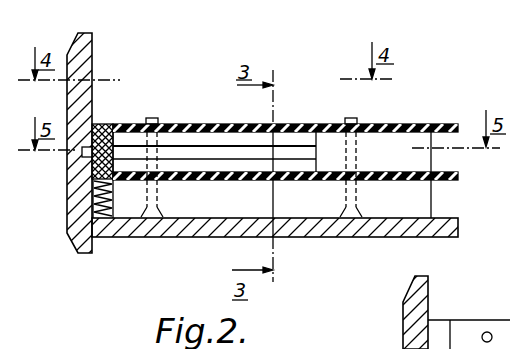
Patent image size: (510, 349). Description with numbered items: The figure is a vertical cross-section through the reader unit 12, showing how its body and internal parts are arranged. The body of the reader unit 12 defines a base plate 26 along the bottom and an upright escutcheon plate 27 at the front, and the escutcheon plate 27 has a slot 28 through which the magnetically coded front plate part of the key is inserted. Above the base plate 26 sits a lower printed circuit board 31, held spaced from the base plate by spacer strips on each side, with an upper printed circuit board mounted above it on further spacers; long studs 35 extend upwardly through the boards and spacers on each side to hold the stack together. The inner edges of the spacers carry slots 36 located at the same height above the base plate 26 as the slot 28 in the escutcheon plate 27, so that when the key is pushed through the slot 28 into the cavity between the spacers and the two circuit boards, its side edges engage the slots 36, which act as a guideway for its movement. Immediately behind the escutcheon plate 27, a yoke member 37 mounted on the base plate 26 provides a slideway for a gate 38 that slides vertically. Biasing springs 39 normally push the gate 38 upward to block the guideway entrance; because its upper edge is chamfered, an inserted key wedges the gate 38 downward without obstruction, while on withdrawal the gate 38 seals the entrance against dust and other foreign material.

The reader unit 12 is at (170, 65).
The base plate 26 is at (170, 224).
The escutcheon plate 27 is at (78, 47).
The slot 28 is at (81, 156).
The lower printed circuit board 31 is at (440, 181).
The long studs 35 is at (156, 120).
The slots 36 is at (295, 150).
The yoke member 37 is at (98, 123).
The gate 38 is at (111, 125).
The biasing springs 39 is at (92, 207).